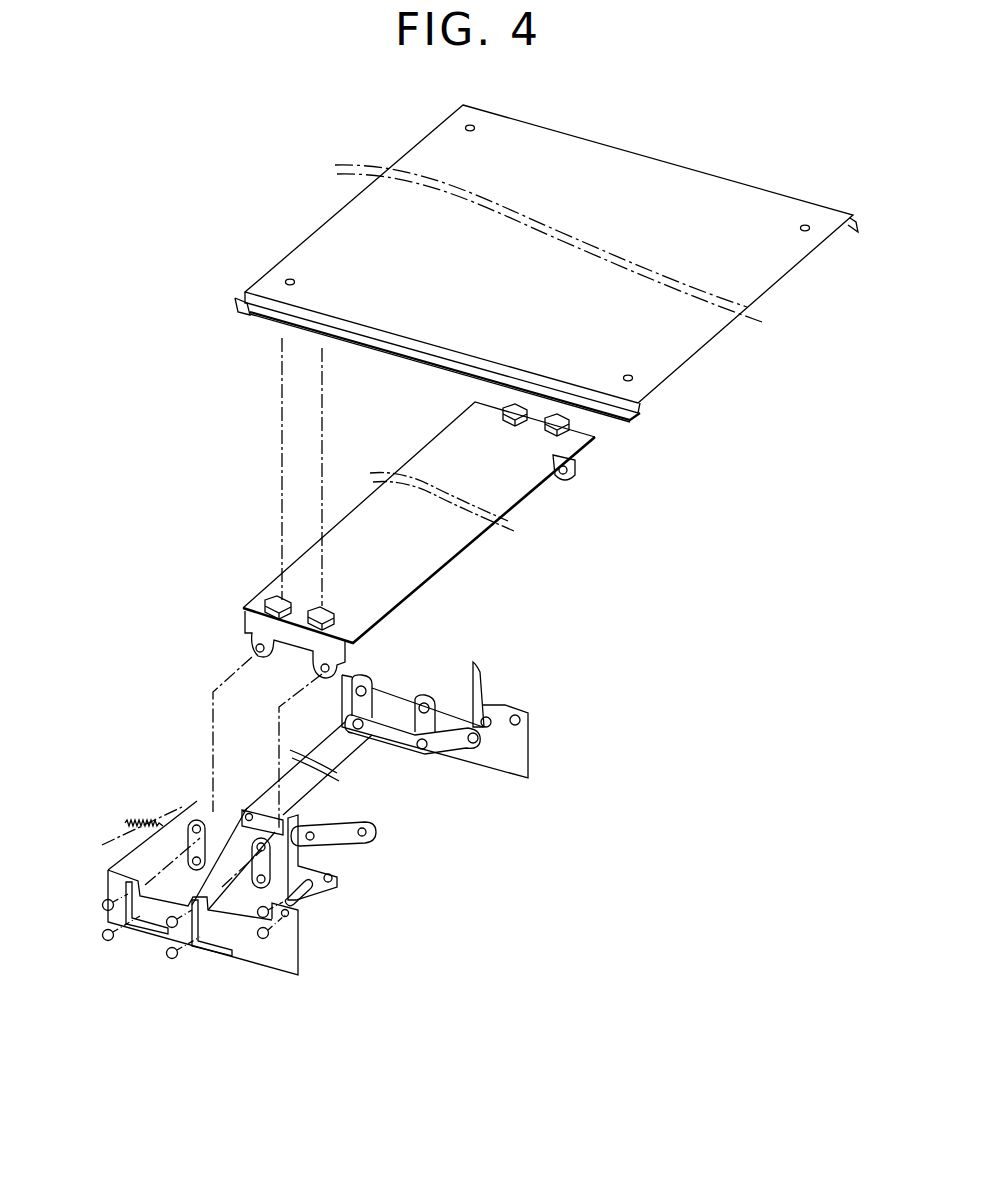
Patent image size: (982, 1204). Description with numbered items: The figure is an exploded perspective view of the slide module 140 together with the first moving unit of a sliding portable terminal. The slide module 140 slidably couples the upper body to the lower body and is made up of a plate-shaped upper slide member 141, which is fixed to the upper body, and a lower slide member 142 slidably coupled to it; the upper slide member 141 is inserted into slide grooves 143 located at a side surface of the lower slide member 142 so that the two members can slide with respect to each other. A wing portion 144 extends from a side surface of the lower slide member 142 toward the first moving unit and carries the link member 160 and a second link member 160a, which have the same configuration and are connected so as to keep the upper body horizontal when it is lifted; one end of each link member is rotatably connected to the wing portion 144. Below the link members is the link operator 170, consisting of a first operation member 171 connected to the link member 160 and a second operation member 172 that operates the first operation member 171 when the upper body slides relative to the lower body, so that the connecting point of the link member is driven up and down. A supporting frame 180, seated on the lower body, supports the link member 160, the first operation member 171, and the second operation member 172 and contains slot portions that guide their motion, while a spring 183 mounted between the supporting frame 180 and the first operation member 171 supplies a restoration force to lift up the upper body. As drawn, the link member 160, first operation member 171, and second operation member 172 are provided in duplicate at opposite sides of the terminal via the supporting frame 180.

The slide module 140 is at (628, 540).
The upper slide member 141 is at (647, 378).
The lower slide member 142 is at (440, 553).
The slide groove 143 is at (275, 608).
The wing portion 144 is at (255, 622).
The link member 160 is at (195, 843).
The second link member 160a is at (260, 882).
The link operator 170 is at (412, 993).
The first operation member 171 is at (345, 838).
The second operation member 172 is at (318, 888).
The supporting frame 180 is at (285, 950).
The spring 183 is at (136, 822).